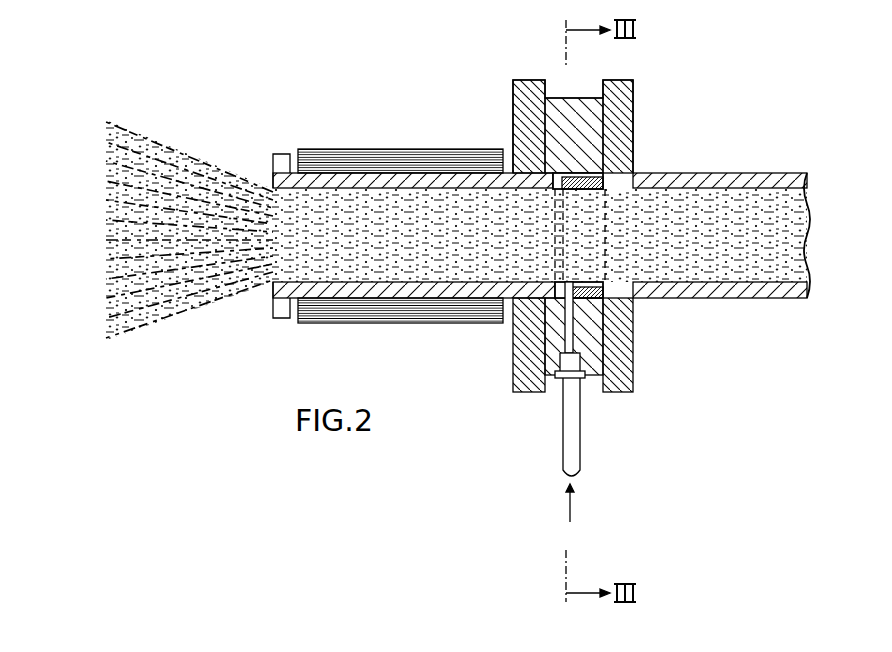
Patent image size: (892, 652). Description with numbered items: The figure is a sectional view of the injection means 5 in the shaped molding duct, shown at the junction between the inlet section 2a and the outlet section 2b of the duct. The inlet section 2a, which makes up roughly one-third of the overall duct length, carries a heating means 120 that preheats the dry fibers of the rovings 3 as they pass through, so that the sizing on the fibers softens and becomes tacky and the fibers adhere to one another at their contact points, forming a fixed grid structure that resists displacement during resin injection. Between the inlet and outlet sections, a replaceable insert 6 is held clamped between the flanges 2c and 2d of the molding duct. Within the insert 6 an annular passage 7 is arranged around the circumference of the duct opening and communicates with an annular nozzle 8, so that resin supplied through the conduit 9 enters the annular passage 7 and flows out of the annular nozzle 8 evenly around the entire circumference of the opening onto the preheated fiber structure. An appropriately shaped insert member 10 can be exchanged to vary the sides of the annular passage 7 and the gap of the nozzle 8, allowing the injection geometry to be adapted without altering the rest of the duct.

The inlet section 2a is at (332, 178).
The outlet section 2b is at (731, 179).
The flange 2c is at (518, 88).
The flange 2d is at (620, 112).
The rovings 3 is at (148, 300).
The injection means 5 is at (519, 60).
The insert 6 is at (568, 117).
The annular passage 7 is at (563, 172).
The annular nozzle 8 is at (555, 243).
The conduit 9 is at (572, 443).
The insert member 10 is at (595, 297).
The heating means 120 is at (371, 160).